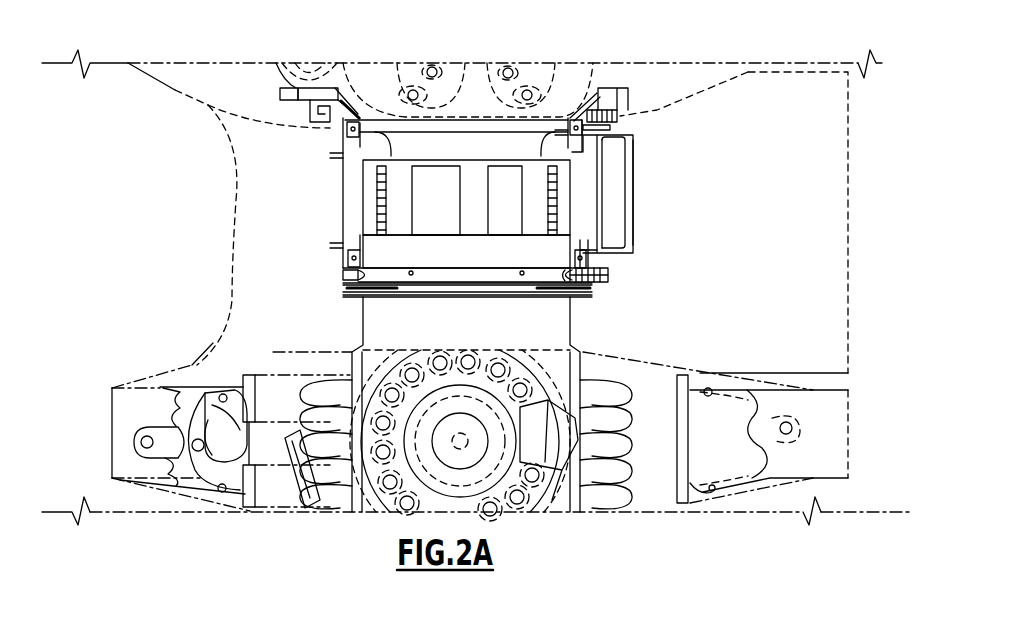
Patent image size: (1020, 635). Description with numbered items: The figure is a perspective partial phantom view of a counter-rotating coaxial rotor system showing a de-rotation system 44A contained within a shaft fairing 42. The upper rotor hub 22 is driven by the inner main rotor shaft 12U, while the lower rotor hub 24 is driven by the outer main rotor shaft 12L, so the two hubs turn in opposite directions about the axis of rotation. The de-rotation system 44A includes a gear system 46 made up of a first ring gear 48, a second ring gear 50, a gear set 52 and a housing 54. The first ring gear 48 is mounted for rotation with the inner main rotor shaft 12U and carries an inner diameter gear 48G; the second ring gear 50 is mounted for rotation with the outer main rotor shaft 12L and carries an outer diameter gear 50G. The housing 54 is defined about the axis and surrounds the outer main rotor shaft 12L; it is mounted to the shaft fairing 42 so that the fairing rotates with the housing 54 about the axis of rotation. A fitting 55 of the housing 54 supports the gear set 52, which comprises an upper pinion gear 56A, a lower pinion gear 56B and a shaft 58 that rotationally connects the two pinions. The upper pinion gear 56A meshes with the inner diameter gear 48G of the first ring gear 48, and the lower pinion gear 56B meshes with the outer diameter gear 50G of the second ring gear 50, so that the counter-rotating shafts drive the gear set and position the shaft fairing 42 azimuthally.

The upper rotor hub 22 is at (543, 70).
The inner main rotor shaft 12U is at (450, 146).
The upper pinion gear 56A is at (600, 110).
The inner diameter gear 48G is at (606, 110).
The first ring gear 48 is at (631, 118).
The de-rotation system 44A is at (655, 136).
The housing 54 is at (647, 159).
The gear set 52 is at (615, 194).
The fitting 55 is at (635, 205).
The shaft 58 is at (600, 213).
The gear system 46 is at (657, 246).
The lower pinion gear 56B is at (610, 276).
The outer diameter gear 50G is at (597, 282).
The second ring gear 50 is at (583, 283).
The shaft fairing 42 is at (270, 216).
The outer main rotor shaft 12L is at (397, 333).
The lower rotor hub 24 is at (607, 470).